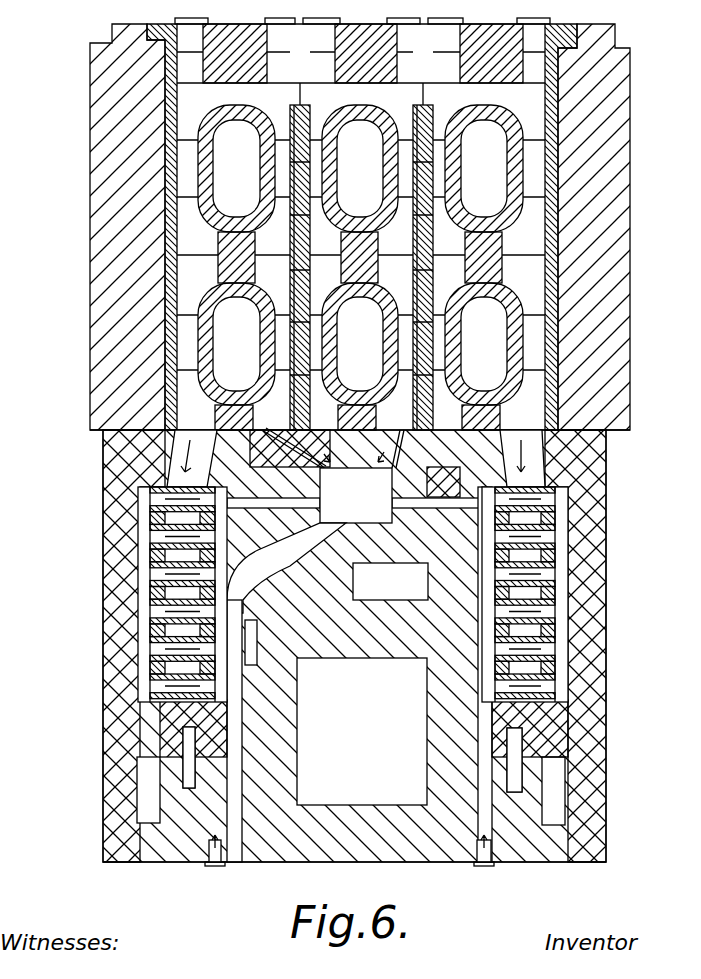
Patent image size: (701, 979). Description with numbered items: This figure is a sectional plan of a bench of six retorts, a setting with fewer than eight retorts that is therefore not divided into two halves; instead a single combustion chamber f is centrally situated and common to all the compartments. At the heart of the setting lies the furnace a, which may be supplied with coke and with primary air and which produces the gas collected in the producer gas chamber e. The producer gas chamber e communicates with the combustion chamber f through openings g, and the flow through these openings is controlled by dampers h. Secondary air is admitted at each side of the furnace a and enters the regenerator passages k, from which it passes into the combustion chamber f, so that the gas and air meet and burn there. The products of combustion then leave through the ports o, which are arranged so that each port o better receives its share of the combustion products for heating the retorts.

The furnace a is at (380, 733).
The producer gas chamber e is at (390, 581).
The combustion chamber f is at (356, 487).
The openings g is at (270, 575).
The dampers h is at (243, 647).
The regenerator passages k is at (142, 576).
The ports o is at (281, 429).